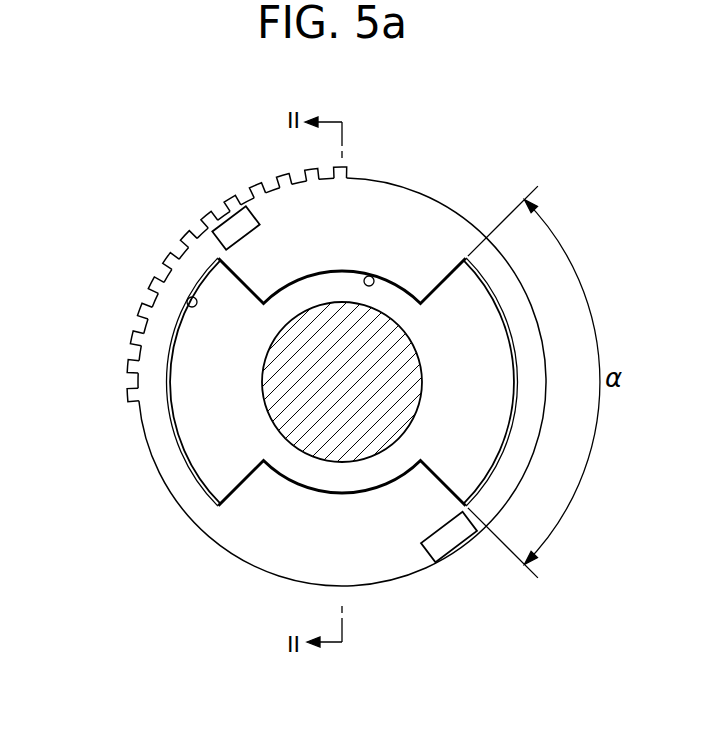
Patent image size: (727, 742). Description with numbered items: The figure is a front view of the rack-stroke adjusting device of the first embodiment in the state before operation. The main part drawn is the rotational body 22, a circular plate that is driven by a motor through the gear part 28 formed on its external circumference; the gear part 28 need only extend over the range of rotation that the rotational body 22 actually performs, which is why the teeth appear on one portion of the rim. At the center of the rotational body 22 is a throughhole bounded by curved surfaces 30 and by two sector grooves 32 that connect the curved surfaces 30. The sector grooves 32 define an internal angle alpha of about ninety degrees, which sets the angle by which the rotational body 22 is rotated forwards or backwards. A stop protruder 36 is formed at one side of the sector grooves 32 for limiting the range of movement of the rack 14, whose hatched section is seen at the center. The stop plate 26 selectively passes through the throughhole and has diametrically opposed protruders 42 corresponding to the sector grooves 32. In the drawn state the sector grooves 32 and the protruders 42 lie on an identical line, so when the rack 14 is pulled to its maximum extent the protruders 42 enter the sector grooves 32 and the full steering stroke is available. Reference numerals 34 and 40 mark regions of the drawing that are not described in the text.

The rack 14 is at (302, 425).
The rotational body 22 is at (258, 162).
The stop plate 26 is at (175, 456).
The gear part 28 is at (195, 232).
The curved surfaces 30 is at (367, 271).
The sector grooves 32 is at (188, 299).
The gap 34 is at (432, 252).
The stop protruder 36 is at (232, 222).
The hub 40 is at (360, 477).
The protruders 42 is at (178, 373).